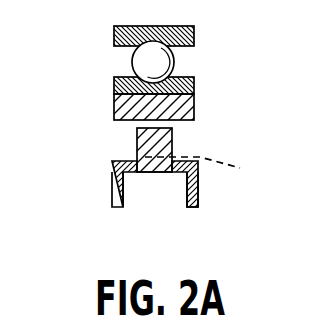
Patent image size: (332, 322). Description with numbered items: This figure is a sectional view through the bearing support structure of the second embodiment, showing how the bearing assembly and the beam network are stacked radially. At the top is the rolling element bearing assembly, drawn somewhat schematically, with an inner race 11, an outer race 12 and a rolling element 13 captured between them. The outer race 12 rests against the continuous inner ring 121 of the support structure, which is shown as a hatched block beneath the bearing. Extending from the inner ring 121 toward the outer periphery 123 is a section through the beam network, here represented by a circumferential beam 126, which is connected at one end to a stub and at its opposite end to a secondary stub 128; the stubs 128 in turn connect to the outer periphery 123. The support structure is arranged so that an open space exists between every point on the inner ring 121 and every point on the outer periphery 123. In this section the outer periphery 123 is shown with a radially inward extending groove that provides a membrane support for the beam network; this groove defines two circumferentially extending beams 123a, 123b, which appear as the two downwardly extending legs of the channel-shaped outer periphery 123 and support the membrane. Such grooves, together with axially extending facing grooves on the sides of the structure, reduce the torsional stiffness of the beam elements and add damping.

The inner race 11 is at (195, 38).
The outer race 12 is at (194, 85).
The rolling elements 13 is at (132, 68).
The continuous inner ring 121 is at (115, 109).
The outer periphery 123 is at (113, 167).
The circumferentially extending beam 123a is at (118, 207).
The circumferentially extending beam 123b is at (192, 207).
The circumferential beam 126 is at (172, 137).
The stub 128 is at (212, 165).